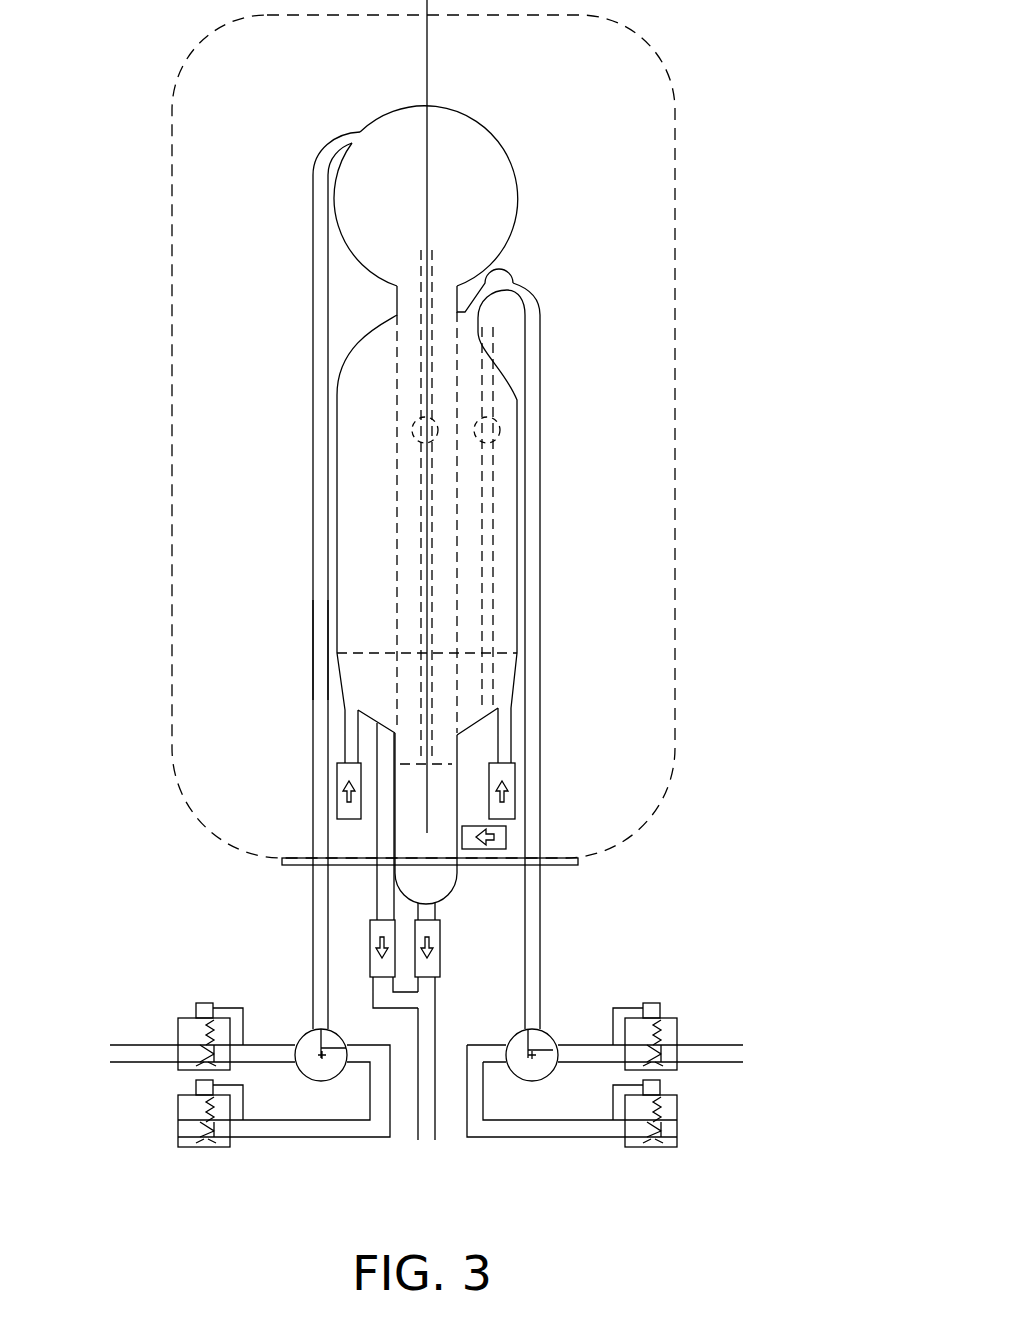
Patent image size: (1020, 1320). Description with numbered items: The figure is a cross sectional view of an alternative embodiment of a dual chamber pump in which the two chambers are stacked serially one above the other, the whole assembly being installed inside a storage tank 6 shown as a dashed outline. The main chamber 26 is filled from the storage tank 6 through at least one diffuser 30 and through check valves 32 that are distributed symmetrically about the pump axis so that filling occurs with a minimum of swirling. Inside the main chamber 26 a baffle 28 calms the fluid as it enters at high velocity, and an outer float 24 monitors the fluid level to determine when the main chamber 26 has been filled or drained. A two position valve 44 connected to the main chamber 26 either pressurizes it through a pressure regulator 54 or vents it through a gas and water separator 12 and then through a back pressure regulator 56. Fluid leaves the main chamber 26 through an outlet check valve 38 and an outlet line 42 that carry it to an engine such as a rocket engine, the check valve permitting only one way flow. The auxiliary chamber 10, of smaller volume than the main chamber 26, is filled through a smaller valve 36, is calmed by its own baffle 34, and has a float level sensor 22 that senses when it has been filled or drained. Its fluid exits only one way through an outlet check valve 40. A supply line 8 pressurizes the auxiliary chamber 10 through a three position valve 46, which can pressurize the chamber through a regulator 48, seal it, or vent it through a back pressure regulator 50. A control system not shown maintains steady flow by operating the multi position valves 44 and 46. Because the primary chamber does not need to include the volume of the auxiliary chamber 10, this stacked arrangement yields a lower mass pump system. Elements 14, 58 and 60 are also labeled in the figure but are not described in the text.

The storage tank 6 is at (172, 255).
The supply line 8 is at (323, 147).
The auxiliary chamber 10 is at (380, 115).
The gas and water separator 12 is at (500, 268).
The second supply tube 14 is at (540, 298).
The float level sensor 22 is at (413, 420).
The outer float 24 is at (497, 417).
The main chamber 26 is at (337, 428).
The baffle 28 is at (337, 652).
The diffuser 30 is at (345, 718).
The check valve 32 is at (337, 776).
The baffle 34 is at (460, 752).
The smaller valve 36 is at (506, 835).
The outlet check valve 38 is at (370, 930).
The outlet check valve 40 is at (442, 932).
The outlet line 42 is at (437, 1028).
The two position valve 44 is at (550, 1037).
The three position valve 46 is at (300, 1035).
The regulator 48 is at (200, 1003).
The back pressure regulator 50 is at (178, 1105).
The pressure regulator 54 is at (660, 1003).
The back pressure regulator 56 is at (677, 1105).
The supply line 58 is at (735, 1045).
The supply line 60 is at (115, 1043).